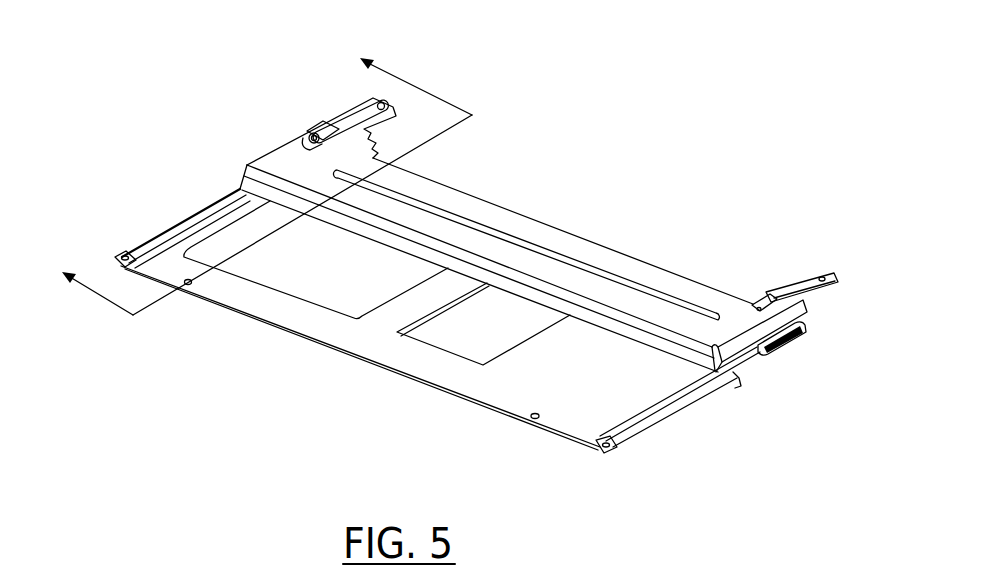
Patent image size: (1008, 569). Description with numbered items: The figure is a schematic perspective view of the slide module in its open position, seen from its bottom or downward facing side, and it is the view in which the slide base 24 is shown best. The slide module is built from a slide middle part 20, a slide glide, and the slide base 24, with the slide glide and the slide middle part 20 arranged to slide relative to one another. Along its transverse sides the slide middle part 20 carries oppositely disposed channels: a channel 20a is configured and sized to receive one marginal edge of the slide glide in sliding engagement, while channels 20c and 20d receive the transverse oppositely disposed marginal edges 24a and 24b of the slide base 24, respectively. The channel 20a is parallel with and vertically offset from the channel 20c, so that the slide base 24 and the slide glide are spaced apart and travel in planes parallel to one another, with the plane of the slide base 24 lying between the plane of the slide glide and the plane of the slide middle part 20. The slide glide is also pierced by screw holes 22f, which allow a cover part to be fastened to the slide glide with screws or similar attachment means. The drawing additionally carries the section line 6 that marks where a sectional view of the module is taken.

The slide middle part 20 is at (728, 358).
The channel 20a is at (771, 370).
The channel 20c is at (788, 318).
The channel 20d is at (318, 127).
The screw hole 22f is at (189, 286).
The slide base 24 is at (533, 224).
The marginal edge 24a is at (838, 283).
The marginal edge 24b is at (353, 110).
The section line 6- 6 is at (258, 175).